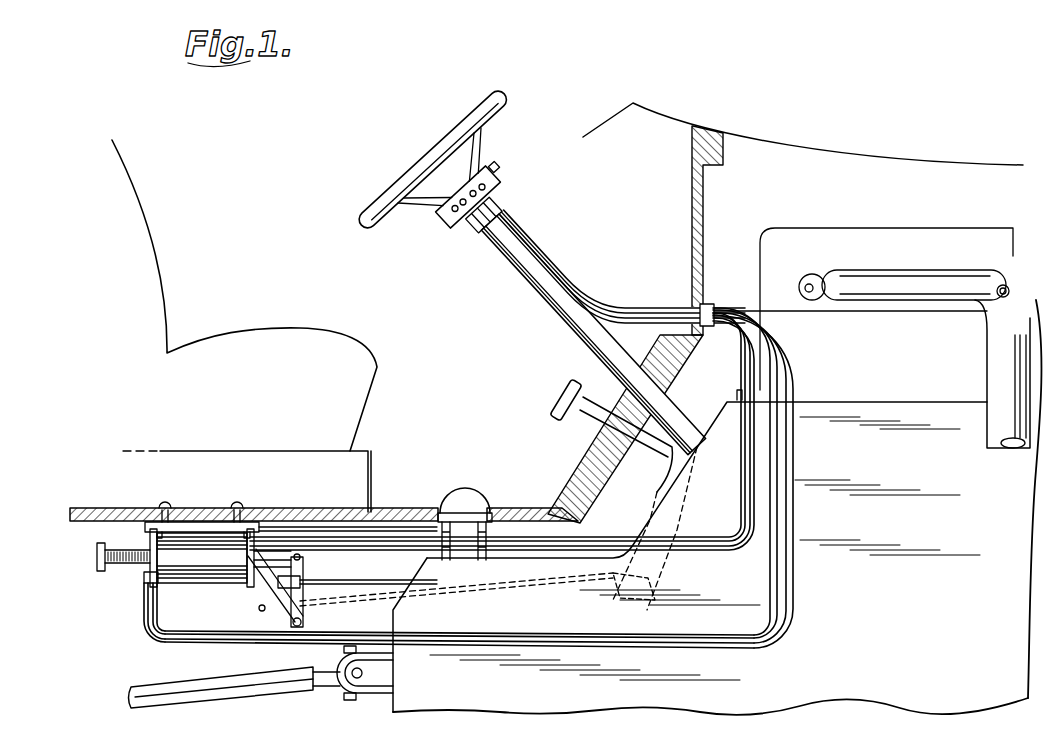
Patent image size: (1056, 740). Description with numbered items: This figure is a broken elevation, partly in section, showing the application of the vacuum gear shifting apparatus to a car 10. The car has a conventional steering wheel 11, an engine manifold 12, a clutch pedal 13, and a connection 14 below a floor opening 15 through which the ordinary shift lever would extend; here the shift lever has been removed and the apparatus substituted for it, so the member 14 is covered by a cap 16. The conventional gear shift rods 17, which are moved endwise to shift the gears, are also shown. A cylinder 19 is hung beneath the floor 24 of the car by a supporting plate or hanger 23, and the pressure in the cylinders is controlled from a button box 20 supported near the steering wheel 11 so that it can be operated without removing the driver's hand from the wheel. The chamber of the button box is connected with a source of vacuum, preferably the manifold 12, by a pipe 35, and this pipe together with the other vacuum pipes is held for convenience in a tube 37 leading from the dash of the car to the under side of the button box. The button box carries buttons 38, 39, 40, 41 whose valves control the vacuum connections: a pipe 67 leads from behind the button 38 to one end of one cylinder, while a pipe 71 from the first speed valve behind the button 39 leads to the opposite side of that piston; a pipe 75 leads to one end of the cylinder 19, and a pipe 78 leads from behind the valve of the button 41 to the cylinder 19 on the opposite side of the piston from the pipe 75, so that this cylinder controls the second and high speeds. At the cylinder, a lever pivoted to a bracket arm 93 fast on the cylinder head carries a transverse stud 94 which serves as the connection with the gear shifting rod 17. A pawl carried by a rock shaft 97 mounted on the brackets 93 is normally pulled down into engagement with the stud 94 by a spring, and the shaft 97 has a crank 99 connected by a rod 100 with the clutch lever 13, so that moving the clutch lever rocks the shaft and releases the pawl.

The car 10 is at (244, 326).
The steering wheel 11 is at (372, 228).
The engine manifold 12 is at (1035, 280).
The clutch pedal 13 is at (602, 413).
The connection 14 is at (497, 516).
The floor opening 15 is at (441, 507).
The cap 16 is at (470, 497).
The gear shift rods 17 is at (372, 582).
The cylinder 19 is at (175, 577).
The button box 20 is at (492, 170).
The supporting plate or hanger 23 is at (150, 522).
The floor 24 is at (313, 498).
The pipe 35 is at (744, 306).
The tube 37 is at (646, 312).
The button 38 is at (486, 187).
The button 39 is at (478, 196).
The button 40 is at (465, 206).
The button 41 is at (453, 212).
The pipe 67 is at (150, 622).
The pipe 71 is at (782, 478).
The pipe 75 is at (205, 644).
The pipe 78 is at (748, 466).
The bracket arm 93 is at (296, 622).
The stud 94 is at (302, 578).
The rock shaft 97 is at (266, 581).
The crank 99 is at (262, 609).
The rod 100 is at (477, 601).